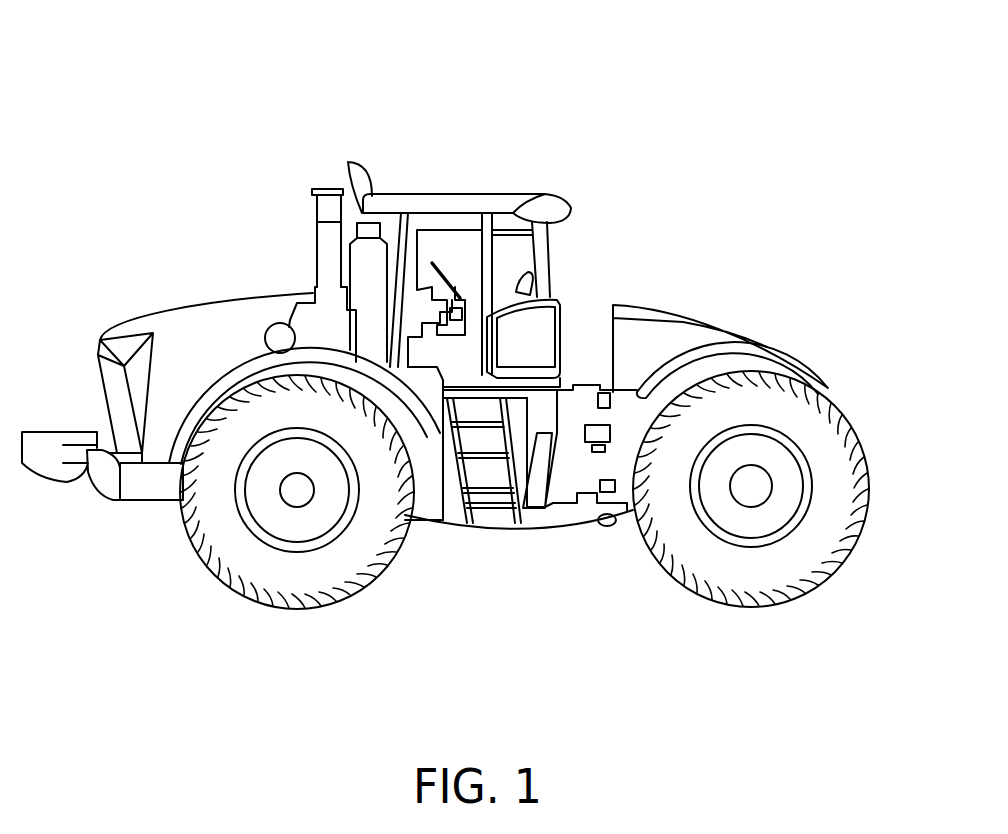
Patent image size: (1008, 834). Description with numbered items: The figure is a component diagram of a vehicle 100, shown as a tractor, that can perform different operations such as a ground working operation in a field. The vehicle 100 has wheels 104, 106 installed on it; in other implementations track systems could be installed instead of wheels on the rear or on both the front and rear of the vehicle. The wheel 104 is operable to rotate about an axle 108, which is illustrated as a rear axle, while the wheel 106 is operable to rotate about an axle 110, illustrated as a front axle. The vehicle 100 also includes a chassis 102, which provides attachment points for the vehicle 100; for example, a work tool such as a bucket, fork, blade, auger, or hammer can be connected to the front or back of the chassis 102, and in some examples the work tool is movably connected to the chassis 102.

The vehicle 100 is at (462, 374).
The chassis 102 is at (648, 268).
The wheel 104 is at (747, 548).
The wheel 106 is at (276, 550).
The axle 108 is at (730, 488).
The axle 110 is at (280, 492).